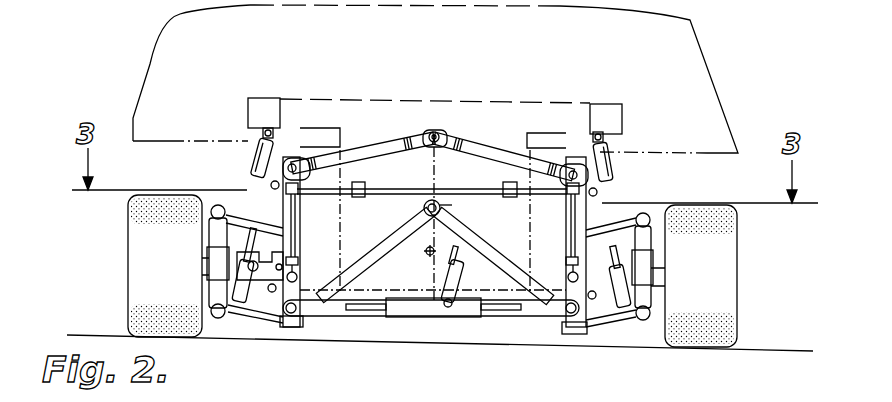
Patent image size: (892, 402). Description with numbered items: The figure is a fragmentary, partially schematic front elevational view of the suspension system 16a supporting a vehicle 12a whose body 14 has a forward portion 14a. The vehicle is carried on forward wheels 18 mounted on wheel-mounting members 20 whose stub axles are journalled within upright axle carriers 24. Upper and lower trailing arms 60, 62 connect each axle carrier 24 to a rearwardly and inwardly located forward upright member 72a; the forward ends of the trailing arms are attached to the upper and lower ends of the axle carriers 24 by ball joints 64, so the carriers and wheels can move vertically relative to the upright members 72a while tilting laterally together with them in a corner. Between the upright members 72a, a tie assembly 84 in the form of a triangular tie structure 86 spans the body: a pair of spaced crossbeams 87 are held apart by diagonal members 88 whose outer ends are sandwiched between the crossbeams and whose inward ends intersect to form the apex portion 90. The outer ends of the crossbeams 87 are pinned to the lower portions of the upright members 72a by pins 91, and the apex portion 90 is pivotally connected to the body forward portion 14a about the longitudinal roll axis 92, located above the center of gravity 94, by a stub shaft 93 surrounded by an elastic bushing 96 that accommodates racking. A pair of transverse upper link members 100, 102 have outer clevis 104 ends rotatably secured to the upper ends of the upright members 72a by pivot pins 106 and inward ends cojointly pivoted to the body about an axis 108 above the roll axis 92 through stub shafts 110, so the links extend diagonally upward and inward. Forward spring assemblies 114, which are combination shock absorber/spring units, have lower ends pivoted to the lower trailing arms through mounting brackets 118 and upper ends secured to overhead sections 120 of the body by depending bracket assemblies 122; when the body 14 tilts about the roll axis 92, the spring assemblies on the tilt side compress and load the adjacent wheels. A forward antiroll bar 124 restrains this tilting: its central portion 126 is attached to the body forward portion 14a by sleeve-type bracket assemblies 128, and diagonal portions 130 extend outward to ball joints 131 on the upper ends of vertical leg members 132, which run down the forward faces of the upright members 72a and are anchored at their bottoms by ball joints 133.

The vehicle 12a is at (143, 31).
The body 14 is at (708, 43).
The forward portion of the body 14a is at (460, 100).
The suspension system 16a is at (466, 334).
The forward wheels 18 is at (737, 266).
The wheel-mounting members 20 is at (665, 322).
The axle carriers 24 is at (665, 242).
The upper trailing arms 60 is at (622, 222).
The lower trailing arms 62 is at (606, 324).
The ball joints 64 is at (225, 212).
The forward upright members 72a is at (302, 233).
The tie assemblies 84 is at (348, 328).
The triangular tie structures 86 is at (520, 317).
The crossbeams 87 is at (362, 316).
The diagonal members 88 is at (370, 268).
The apex portion 90 is at (452, 214).
The pins 91 is at (295, 327).
The roll axis 92 is at (460, 192).
The stub shaft 93 is at (424, 208).
The center of gravity 94 is at (426, 253).
The bushing 96 is at (424, 210).
The upper link member 100 is at (345, 155).
The upper link member 102 is at (481, 144).
The clevis 104 is at (291, 158).
The pivot pins 106 is at (289, 158).
The axis 108 is at (431, 132).
The stub shafts 110 is at (436, 130).
The forward spring assemblies 114 is at (255, 168).
The mounting brackets 118 is at (246, 305).
The overhead sections 120 is at (612, 104).
The bracket assemblies 122 is at (262, 133).
The forward antiroll bar 124 is at (382, 181).
The central portion 126 is at (450, 208).
The sleeve-type bracket assemblies 128 is at (510, 199).
The diagonal portions 130 is at (541, 160).
The ball joints 131 is at (300, 206).
The vertical leg members 132 is at (571, 218).
The ball joints 133 is at (298, 278).